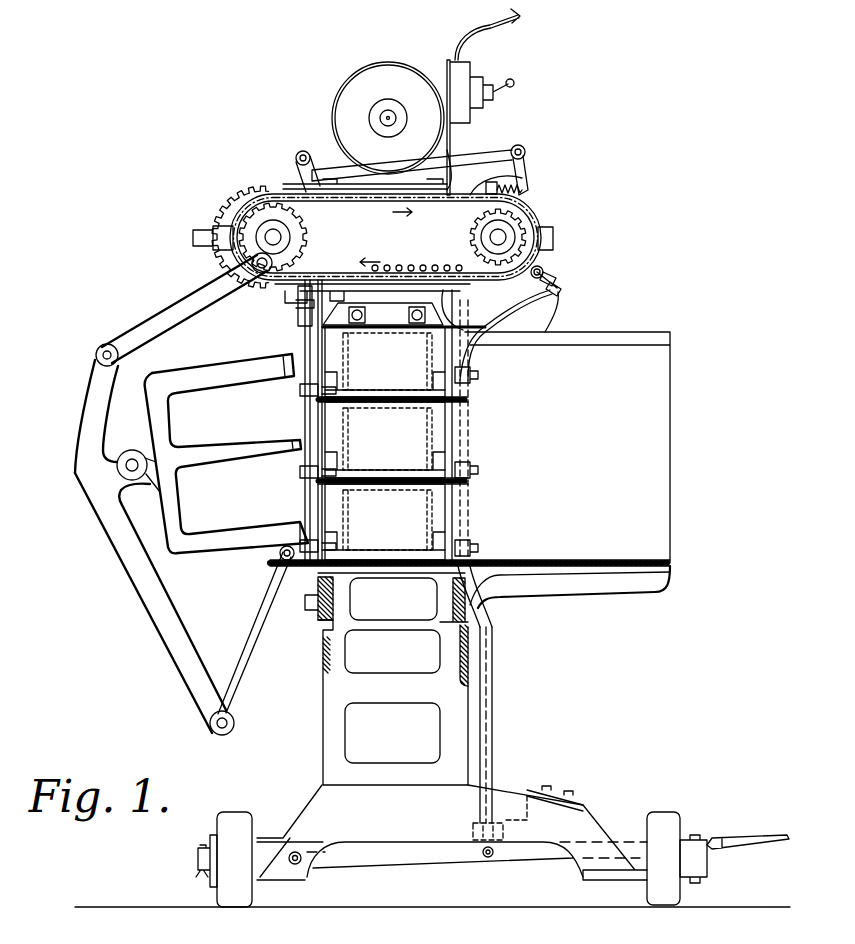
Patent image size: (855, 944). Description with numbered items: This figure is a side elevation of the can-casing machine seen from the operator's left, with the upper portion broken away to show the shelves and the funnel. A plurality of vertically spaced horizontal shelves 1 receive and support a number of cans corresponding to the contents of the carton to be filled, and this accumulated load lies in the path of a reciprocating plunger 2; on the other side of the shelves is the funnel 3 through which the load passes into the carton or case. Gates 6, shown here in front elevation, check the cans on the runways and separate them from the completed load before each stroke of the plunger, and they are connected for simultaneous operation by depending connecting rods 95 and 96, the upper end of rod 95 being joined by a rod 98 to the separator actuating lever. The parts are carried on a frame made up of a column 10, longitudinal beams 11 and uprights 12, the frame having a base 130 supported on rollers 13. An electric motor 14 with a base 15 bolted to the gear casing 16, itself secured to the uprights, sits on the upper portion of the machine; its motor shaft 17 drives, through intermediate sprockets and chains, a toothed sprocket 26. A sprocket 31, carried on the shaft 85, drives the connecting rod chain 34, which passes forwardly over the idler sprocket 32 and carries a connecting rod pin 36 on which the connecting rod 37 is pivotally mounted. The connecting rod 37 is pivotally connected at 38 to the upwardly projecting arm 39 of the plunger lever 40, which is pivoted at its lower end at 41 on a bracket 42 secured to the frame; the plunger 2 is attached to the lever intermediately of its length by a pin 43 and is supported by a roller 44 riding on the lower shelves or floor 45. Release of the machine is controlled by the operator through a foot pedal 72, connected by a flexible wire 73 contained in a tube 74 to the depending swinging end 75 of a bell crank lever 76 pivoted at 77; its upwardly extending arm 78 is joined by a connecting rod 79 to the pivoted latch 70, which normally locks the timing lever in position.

The horizontal shelves 1 is at (435, 417).
The reciprocating plunger 2 is at (236, 383).
The funnel 3 is at (537, 345).
The gates 6 is at (383, 403).
The column 10 is at (462, 699).
The longitudinal beams 11 is at (450, 593).
The uprights 12 is at (455, 430).
The rollers 13 is at (657, 812).
The electric motor 14 is at (388, 62).
The motor base 15 is at (472, 160).
The gear casing 16 is at (525, 182).
The motor shaft 17 is at (388, 118).
The toothed sprocket 26 is at (240, 190).
The sprocket 31 is at (300, 238).
The idler sprocket 32 is at (478, 224).
The connecting rod chain 34 is at (400, 268).
The connecting rod pin 36 is at (262, 276).
The connecting rod 37 is at (162, 316).
The pivotal connection 38 is at (104, 345).
The upwardly projecting arm 39 is at (92, 395).
The plunger lever 40 is at (160, 615).
The lever pivot 41 is at (210, 723).
The bracket 42 is at (256, 658).
The pin 43 is at (137, 452).
The roller 44 is at (280, 557).
The lower shelves or floor 45 is at (300, 570).
The latch 70 is at (308, 151).
The foot pedal 72 is at (742, 836).
The flexible wire 73 is at (552, 294).
The tube 74 is at (493, 710).
The depending swinging end 75 is at (565, 290).
The bell crank lever 76 is at (556, 279).
The bell crank pivot 77 is at (545, 270).
The upwardly extending arm 78 is at (530, 170).
The connecting rod 79 is at (523, 148).
The shaft 85 is at (262, 232).
The connecting rod 95 is at (308, 418).
The connecting rod 96 is at (476, 433).
The rod 98 is at (304, 322).
The base 130 is at (329, 810).